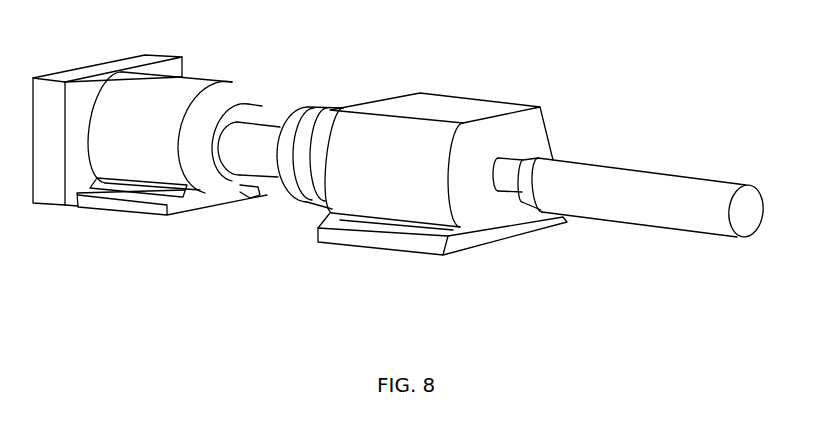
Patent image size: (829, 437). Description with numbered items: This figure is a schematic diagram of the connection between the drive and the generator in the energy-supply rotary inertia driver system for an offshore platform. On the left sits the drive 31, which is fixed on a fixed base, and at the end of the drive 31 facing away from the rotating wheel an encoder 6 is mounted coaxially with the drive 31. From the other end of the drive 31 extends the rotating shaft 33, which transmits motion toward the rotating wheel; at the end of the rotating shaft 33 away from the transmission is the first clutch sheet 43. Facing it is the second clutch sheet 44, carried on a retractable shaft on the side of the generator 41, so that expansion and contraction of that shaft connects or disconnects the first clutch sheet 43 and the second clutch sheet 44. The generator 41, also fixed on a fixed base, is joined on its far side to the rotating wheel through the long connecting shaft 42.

The encoder 6 is at (95, 68).
The drive 31 is at (133, 128).
The rotating shaft 33 is at (267, 135).
The first clutch sheet 43 is at (280, 174).
The second clutch sheet 44 is at (325, 133).
The generator 41 is at (352, 165).
The connecting shaft 42 is at (550, 187).